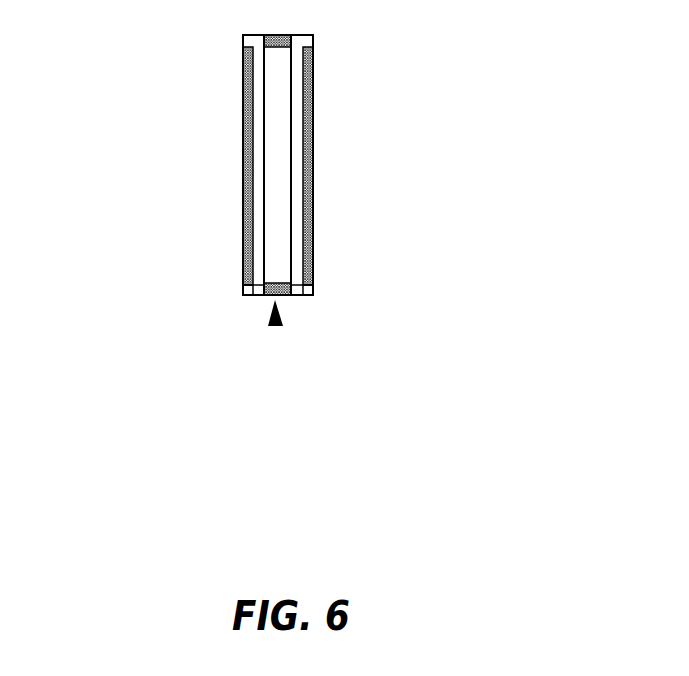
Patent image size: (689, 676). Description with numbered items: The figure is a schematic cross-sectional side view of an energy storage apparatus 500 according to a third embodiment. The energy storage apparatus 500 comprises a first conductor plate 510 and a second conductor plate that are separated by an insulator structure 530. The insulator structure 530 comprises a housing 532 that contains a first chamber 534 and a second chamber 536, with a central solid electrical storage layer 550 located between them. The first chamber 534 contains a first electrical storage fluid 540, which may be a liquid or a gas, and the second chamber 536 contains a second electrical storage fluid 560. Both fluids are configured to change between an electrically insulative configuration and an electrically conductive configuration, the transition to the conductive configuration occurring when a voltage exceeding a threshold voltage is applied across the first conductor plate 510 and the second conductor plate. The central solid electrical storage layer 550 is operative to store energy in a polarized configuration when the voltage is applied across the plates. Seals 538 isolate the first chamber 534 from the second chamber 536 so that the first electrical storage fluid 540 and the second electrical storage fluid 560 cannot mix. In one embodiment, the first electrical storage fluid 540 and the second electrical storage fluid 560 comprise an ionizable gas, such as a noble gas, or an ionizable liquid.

The energy storage apparatus 500 is at (98, 238).
The first conductor plate 510 is at (290, 165).
The insulator structure 530 is at (275, 325).
The housing 532 is at (246, 295).
The first chamber 534 is at (257, 295).
The second chamber 536 is at (303, 295).
The seals 538 is at (267, 285).
The first electrical storage fluid 540 is at (257, 83).
The central solid electrical storage layer 550 is at (273, 235).
The second electrical storage fluid 560 is at (300, 97).